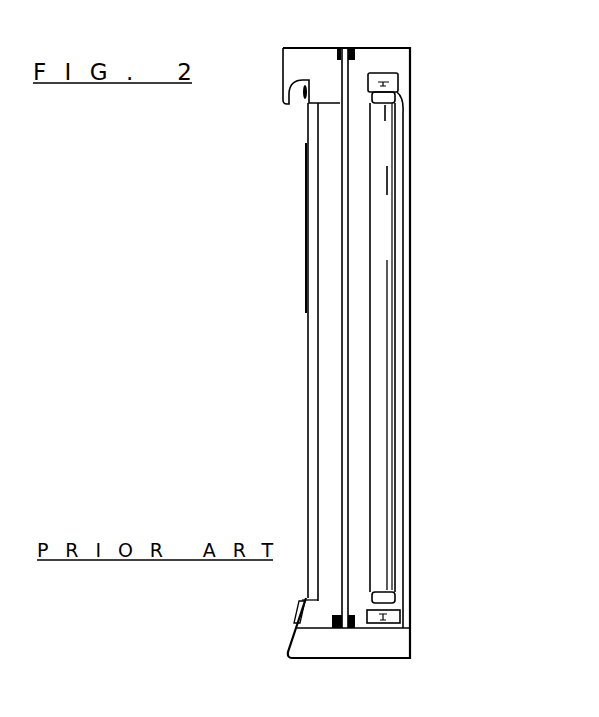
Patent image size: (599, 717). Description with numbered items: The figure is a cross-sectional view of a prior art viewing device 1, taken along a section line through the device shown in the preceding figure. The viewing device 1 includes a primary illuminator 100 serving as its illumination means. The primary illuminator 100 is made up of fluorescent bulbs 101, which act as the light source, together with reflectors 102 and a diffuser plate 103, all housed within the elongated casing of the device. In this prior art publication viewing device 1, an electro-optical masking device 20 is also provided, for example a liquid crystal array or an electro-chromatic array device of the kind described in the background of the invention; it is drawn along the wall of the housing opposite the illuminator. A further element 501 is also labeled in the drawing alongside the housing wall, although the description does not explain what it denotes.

The viewing device 1 is at (365, 46).
The electro-optical masking device 20 is at (312, 403).
The strip member 501 is at (305, 257).
The primary illuminator 100 is at (405, 111).
The fluorescent bulbs 101 is at (388, 180).
The reflectors 102 is at (404, 279).
The diffuser plate 103 is at (360, 367).